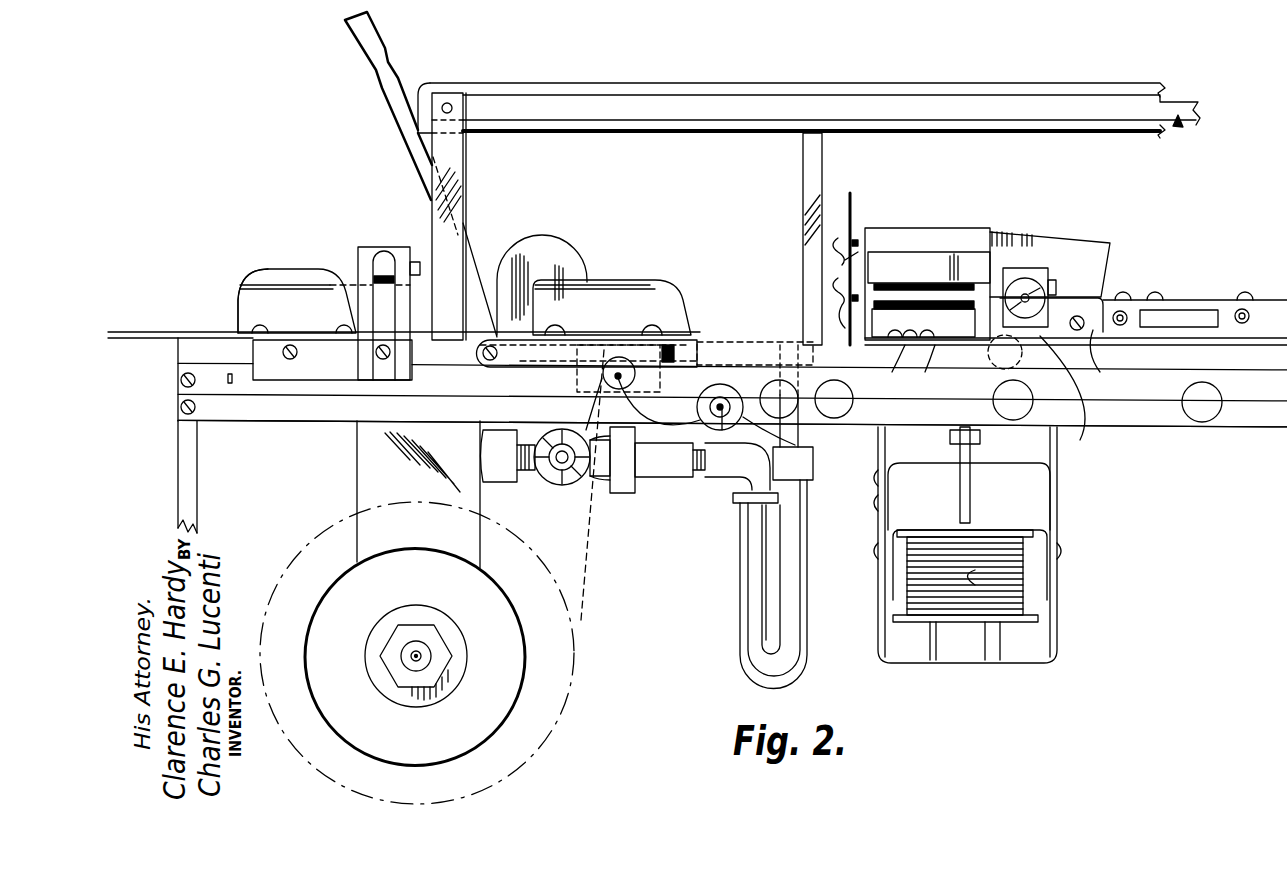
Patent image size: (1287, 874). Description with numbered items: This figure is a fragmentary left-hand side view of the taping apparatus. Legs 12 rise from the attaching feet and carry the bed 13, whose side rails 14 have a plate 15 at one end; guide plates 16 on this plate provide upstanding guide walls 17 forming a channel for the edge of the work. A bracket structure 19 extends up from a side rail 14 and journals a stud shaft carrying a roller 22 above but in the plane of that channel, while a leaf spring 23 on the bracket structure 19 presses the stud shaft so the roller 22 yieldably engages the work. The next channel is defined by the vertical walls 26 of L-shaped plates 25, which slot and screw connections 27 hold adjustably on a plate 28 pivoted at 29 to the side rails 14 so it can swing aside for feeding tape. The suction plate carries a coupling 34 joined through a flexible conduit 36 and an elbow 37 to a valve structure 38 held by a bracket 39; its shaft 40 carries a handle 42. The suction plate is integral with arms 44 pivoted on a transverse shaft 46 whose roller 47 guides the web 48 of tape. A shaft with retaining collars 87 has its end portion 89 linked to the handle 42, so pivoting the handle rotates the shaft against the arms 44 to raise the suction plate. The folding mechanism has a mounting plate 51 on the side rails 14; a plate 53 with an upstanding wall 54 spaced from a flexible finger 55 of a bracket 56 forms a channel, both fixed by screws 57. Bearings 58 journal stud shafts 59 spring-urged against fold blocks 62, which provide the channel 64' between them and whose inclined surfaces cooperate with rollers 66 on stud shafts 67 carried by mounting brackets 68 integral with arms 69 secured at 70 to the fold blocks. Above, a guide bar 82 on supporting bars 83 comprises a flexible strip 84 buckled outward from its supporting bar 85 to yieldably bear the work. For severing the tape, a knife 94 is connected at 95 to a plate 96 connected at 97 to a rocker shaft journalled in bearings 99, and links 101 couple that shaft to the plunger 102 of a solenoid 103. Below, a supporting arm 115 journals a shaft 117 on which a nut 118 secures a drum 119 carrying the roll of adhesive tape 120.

The legs 12 is at (190, 468).
The bed 13 is at (1118, 430).
The side rails 14 is at (1165, 408).
The plate 15 is at (148, 340).
The guide plates 16 is at (240, 320).
The guide walls 17 is at (310, 314).
The bracket structure 19 is at (346, 370).
The roller 22 is at (412, 265).
The leaf spring 23 is at (376, 280).
The L-shaped plates 25 is at (660, 350).
The vertical walls 26 is at (613, 334).
The slot and screw connections 27 is at (652, 328).
The plate 28 is at (690, 345).
The pivotal connection 29 is at (486, 368).
The coupling 34 is at (770, 345).
The flexible conduit 36 is at (802, 590).
The elbow 37 is at (735, 468).
The valve structure 38 is at (618, 496).
The bracket 39 is at (655, 480).
The shaft 40 is at (562, 486).
The handle 42 is at (497, 290).
The arms 44 is at (735, 345).
The shaft 46 is at (650, 470).
The roller 47 is at (681, 482).
The web 48 is at (583, 560).
The mounting plate 51 is at (1073, 404).
The plate 53 is at (946, 373).
The upstanding wall 54 is at (918, 280).
The flexible finger 55 is at (928, 236).
The bracket 56 is at (1050, 264).
The screws 57 is at (898, 373).
The bearings 58 is at (1258, 300).
The stud shafts 59 is at (1242, 310).
The fold blocks 62 is at (1182, 306).
The opening 64' is at (1030, 367).
The rollers 66 is at (1040, 290).
The stud shafts 67 is at (1026, 296).
The mounting brackets 68 is at (1012, 272).
The arms 69 is at (1078, 316).
The securing connection 70 is at (1100, 372).
The guide bar 82 is at (1180, 126).
The supporting bars 83 is at (842, 172).
The flexible strip 84 is at (805, 95).
The supporting bar 85 is at (811, 114).
The retaining collars 87 is at (700, 396).
The end portion 89 is at (800, 440).
The knife 94 is at (852, 205).
The connection 95 is at (838, 245).
The plate 96 is at (858, 252).
The connection 97 is at (838, 320).
The bearings 99 is at (929, 350).
The links 101 is at (972, 498).
The plunger 102 is at (995, 615).
The solenoid 103 is at (1025, 585).
The supporting arm 115 is at (398, 488).
The shaft 117 is at (430, 656).
The nut 118 is at (445, 688).
The drum 119 is at (500, 760).
The roll of adhesive tape 120 is at (545, 674).